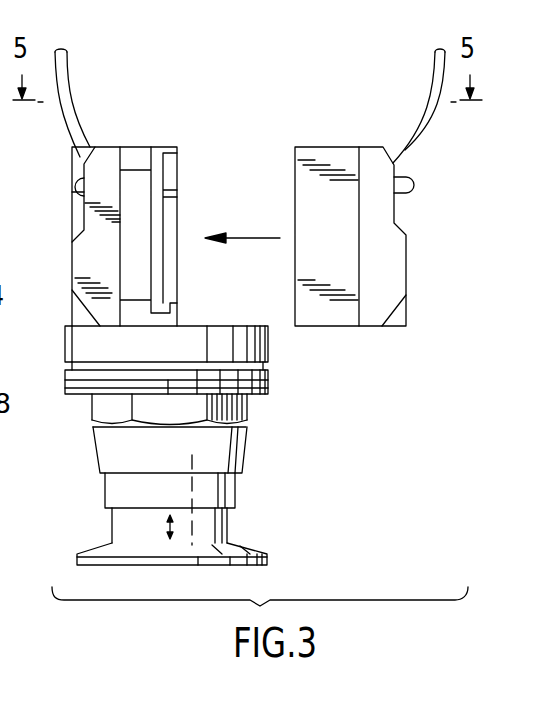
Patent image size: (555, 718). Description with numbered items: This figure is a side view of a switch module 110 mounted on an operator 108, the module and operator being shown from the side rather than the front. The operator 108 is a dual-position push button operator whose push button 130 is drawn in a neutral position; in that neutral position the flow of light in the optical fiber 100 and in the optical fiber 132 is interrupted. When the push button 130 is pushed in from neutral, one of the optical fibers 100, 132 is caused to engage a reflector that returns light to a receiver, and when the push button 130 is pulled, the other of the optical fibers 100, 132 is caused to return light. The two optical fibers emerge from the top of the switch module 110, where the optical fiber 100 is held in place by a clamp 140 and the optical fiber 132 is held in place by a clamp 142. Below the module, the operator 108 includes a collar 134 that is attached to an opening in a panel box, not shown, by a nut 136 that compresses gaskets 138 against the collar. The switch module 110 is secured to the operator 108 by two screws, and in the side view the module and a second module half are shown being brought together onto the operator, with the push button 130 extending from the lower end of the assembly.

The optical fiber 100 is at (250, 106).
The optical fiber 132 is at (74, 100).
The switch module 110 is at (160, 147).
The clamp 142 is at (73, 186).
The clamp 140 is at (414, 188).
The collar 134 is at (65, 345).
The gaskets 138 is at (65, 385).
The nut 136 is at (90, 411).
The operator 108 is at (96, 455).
The push button 130 is at (77, 553).